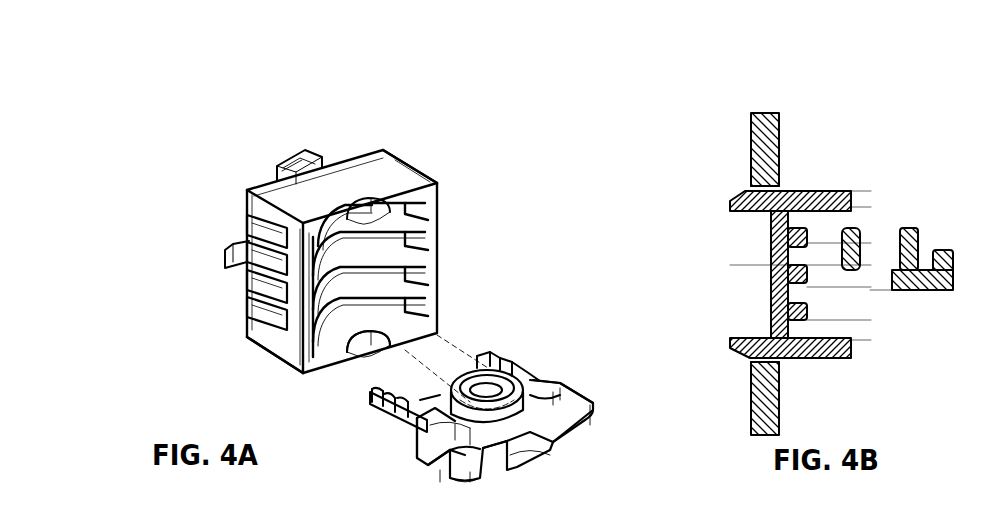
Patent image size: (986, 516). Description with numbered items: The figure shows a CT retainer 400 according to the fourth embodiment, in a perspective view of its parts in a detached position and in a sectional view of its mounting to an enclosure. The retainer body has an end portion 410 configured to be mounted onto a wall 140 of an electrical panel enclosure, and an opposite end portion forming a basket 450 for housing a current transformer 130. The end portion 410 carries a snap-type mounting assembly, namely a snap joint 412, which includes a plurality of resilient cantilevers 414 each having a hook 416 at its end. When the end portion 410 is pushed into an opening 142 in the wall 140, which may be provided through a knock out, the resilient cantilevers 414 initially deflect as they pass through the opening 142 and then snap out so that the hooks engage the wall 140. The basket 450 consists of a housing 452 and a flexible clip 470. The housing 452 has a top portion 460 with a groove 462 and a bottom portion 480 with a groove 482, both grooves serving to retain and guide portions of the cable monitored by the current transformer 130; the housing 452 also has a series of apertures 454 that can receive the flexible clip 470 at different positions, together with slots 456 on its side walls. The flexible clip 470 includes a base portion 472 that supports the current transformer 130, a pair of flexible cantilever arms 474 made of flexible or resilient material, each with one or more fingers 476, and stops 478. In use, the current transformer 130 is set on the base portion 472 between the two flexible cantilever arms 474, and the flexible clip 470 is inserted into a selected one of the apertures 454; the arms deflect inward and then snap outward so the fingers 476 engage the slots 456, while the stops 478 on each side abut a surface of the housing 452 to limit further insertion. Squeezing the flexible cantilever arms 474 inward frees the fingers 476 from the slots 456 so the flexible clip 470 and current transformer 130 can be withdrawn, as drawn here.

In FIG. 4A, the CT retainer 400 is at (208, 148).
In FIG. 4B, the CT retainer 400 is at (882, 150).
In FIG. 4A, the end portion 410 is at (336, 80).
In FIG. 4A, the snap joint 412 is at (279, 178).
In FIG. 4B, the snap joint 412 is at (732, 204).
In FIG. 4A, the resilient cantilevers 414 is at (321, 147).
In FIG. 4A, the hook 416 is at (300, 158).
In FIG. 4A, the basket 450 is at (626, 80).
In FIG. 4A, the housing 452 is at (385, 156).
In FIG. 4B, the housing 452 is at (828, 367).
In FIG. 4A, the apertures 454 is at (430, 208).
In FIG. 4A, the slots 456 is at (244, 218).
In FIG. 4B, the slots 456 is at (842, 300).
In FIG. 4A, the top portion 460 is at (418, 166).
In FIG. 4A, the groove 462 is at (392, 220).
In FIG. 4A, the flexible clip 470 is at (530, 456).
In FIG. 4B, the flexible clip 470 is at (957, 278).
In FIG. 4A, the base portion 472 is at (545, 413).
In FIG. 4B, the base portion 472 is at (923, 264).
In FIG. 4A, the flexible cantilever arms 474 is at (427, 396).
In FIG. 4A, the fingers 476 is at (518, 366).
In FIG. 4A, the stops 478 is at (420, 446).
In FIG. 4A, the bottom portion 480 is at (292, 355).
In FIG. 4A, the groove 482 is at (360, 362).
In FIG. 4A, the current transformer 130 is at (520, 372).
In FIG. 4B, the current transformer 130 is at (912, 232).
In FIG. 4B, the wall 140 is at (757, 142).
In FIG. 4B, the opening 142 is at (790, 186).